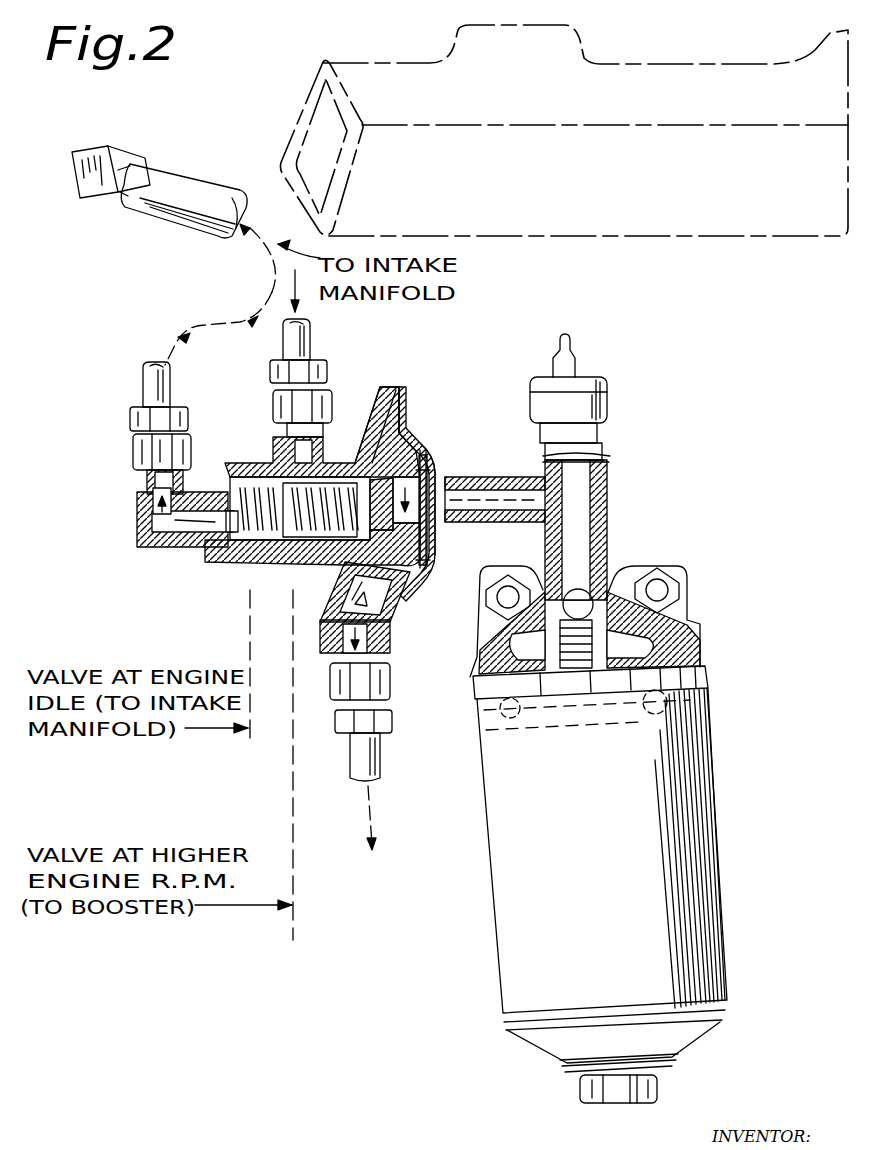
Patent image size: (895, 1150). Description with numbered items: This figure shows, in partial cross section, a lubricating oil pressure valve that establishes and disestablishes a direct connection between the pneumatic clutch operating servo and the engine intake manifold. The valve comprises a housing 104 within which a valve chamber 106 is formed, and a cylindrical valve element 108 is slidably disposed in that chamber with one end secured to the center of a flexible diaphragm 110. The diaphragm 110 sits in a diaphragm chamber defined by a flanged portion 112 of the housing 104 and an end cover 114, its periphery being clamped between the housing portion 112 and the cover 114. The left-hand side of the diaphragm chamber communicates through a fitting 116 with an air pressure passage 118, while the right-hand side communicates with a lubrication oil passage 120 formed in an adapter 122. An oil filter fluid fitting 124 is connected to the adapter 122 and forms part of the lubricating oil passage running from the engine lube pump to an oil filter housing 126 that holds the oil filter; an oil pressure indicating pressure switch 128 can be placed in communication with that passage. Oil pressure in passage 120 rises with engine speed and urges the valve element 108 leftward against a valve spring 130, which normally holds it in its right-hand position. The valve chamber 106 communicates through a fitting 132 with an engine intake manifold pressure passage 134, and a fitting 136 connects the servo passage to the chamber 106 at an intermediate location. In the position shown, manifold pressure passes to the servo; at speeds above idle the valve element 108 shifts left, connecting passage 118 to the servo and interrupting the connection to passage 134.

The housing 104 is at (262, 478).
The valve chamber 106 is at (268, 576).
The cylindrical valve element 108 is at (338, 576).
The flexible diaphragm 110 is at (420, 440).
The flanged portion 112 is at (382, 430).
The end cover 114 is at (440, 462).
The fitting 116 is at (388, 640).
The air pressure passage 118 is at (380, 772).
The lubrication oil passage 120 is at (490, 476).
The adapter 122 is at (515, 522).
The oil filter fluid fitting 124 is at (608, 492).
The oil filter housing 126 is at (478, 906).
The oil pressure indicating pressure switch 128 is at (606, 402).
The valve spring 130 is at (258, 470).
The fitting 132 is at (140, 456).
The engine intake manifold pressure passage 134 is at (158, 218).
The fitting 136 is at (288, 407).